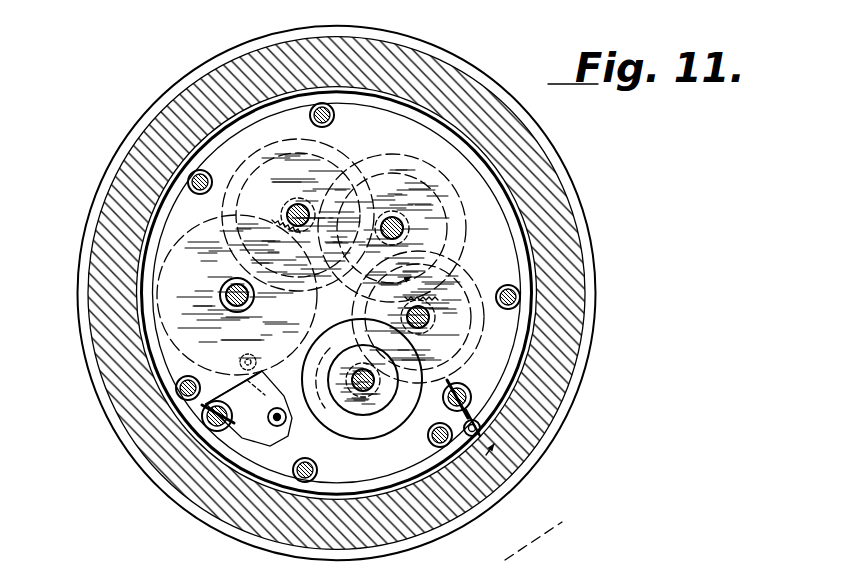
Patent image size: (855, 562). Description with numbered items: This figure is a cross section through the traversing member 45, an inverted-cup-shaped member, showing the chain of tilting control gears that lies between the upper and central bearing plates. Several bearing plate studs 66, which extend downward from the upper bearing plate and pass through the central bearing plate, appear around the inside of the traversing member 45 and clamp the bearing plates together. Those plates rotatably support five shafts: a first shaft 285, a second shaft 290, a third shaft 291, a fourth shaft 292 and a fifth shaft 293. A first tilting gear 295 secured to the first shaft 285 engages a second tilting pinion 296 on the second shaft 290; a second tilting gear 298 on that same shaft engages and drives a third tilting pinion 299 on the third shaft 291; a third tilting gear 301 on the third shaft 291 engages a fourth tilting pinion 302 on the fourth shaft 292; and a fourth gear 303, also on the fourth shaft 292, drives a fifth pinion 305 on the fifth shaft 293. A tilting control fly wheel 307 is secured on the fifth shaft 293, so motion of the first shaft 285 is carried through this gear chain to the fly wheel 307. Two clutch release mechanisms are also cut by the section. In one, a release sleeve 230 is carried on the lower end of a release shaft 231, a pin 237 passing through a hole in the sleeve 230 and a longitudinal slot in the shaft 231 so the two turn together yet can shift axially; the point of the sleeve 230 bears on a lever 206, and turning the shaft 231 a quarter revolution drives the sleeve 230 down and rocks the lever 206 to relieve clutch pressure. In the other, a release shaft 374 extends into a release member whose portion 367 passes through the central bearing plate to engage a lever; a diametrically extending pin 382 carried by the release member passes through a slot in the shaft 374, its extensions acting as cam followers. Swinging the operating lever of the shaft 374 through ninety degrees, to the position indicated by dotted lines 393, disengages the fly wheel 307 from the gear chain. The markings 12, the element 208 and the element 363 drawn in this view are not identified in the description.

The traversing member 45 is at (560, 215).
The bearing plate studs 66 is at (331, 103).
The second shaft 290 is at (298, 203).
The second tilting gear 298 is at (335, 162).
The second tilting pinion 296 is at (283, 220).
The third tilting pinion 299 is at (412, 178).
The third shaft 291 is at (403, 222).
The third tilting gear 301 is at (462, 224).
The fourth shaft 292 is at (427, 309).
The direction arrow 12 is at (437, 373).
The fourth tilting pinion 302 is at (432, 316).
The fourth gear 303 is at (458, 352).
The first shaft 285 is at (233, 302).
The first tilting gear 295 is at (192, 352).
The release sleeve 230 is at (203, 411).
The release shaft 231 is at (209, 402).
The pin 237 is at (212, 429).
The lever 206 is at (255, 411).
The pin 208 is at (276, 427).
The fifth pinion 305 is at (338, 413).
The tilting control fly wheel 307 is at (347, 440).
The fifth shaft 293 is at (368, 394).
The diametrically extending pin 382 is at (456, 386).
The release shaft 374 is at (475, 396).
The portion of release member 367 is at (472, 401).
The stud 363 is at (481, 430).
The dotted lines 393 is at (546, 529).